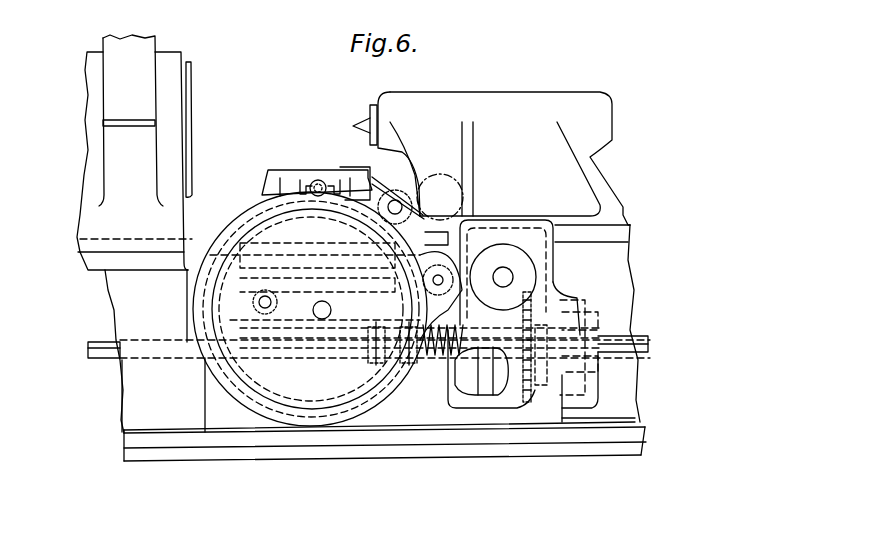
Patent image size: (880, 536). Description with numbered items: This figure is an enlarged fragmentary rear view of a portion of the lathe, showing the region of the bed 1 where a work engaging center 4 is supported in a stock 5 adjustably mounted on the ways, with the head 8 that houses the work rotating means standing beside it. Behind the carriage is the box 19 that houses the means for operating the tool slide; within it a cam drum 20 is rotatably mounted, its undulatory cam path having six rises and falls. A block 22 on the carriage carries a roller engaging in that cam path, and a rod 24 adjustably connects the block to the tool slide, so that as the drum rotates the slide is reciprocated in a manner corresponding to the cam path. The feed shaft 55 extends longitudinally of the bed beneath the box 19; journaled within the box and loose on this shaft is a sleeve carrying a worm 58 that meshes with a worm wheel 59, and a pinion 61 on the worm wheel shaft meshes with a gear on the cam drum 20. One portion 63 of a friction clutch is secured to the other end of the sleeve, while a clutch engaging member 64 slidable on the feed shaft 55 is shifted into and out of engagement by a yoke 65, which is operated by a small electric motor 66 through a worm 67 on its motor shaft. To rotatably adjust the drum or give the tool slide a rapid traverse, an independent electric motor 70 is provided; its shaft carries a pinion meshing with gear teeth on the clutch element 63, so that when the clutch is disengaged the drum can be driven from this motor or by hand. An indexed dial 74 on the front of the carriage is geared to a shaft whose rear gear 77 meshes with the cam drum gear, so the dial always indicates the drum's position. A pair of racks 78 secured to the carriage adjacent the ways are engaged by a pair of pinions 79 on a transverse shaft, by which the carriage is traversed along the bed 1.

The bed 1 is at (125, 414).
The work engaging centers 4 is at (362, 110).
The stock 5 is at (504, 92).
The head 8 is at (170, 76).
The box 19 is at (197, 292).
The cam drum 20 is at (308, 425).
The block 22 is at (297, 170).
The rod 24 is at (318, 180).
The feed shaft 55 is at (115, 362).
The worm 58 is at (436, 360).
The worm wheel 59 is at (492, 232).
The pinion 61 is at (425, 290).
The friction clutch portion 63 is at (532, 395).
The clutch engaging member 64 is at (575, 296).
The yoke 65 is at (592, 316).
The electric motor 66 is at (490, 396).
The worm 67 is at (598, 387).
The electric motor 70 is at (530, 270).
The indexed dial 74 is at (452, 176).
The gear 77 is at (405, 196).
The racks 78 is at (305, 317).
The pinions 79 is at (255, 318).